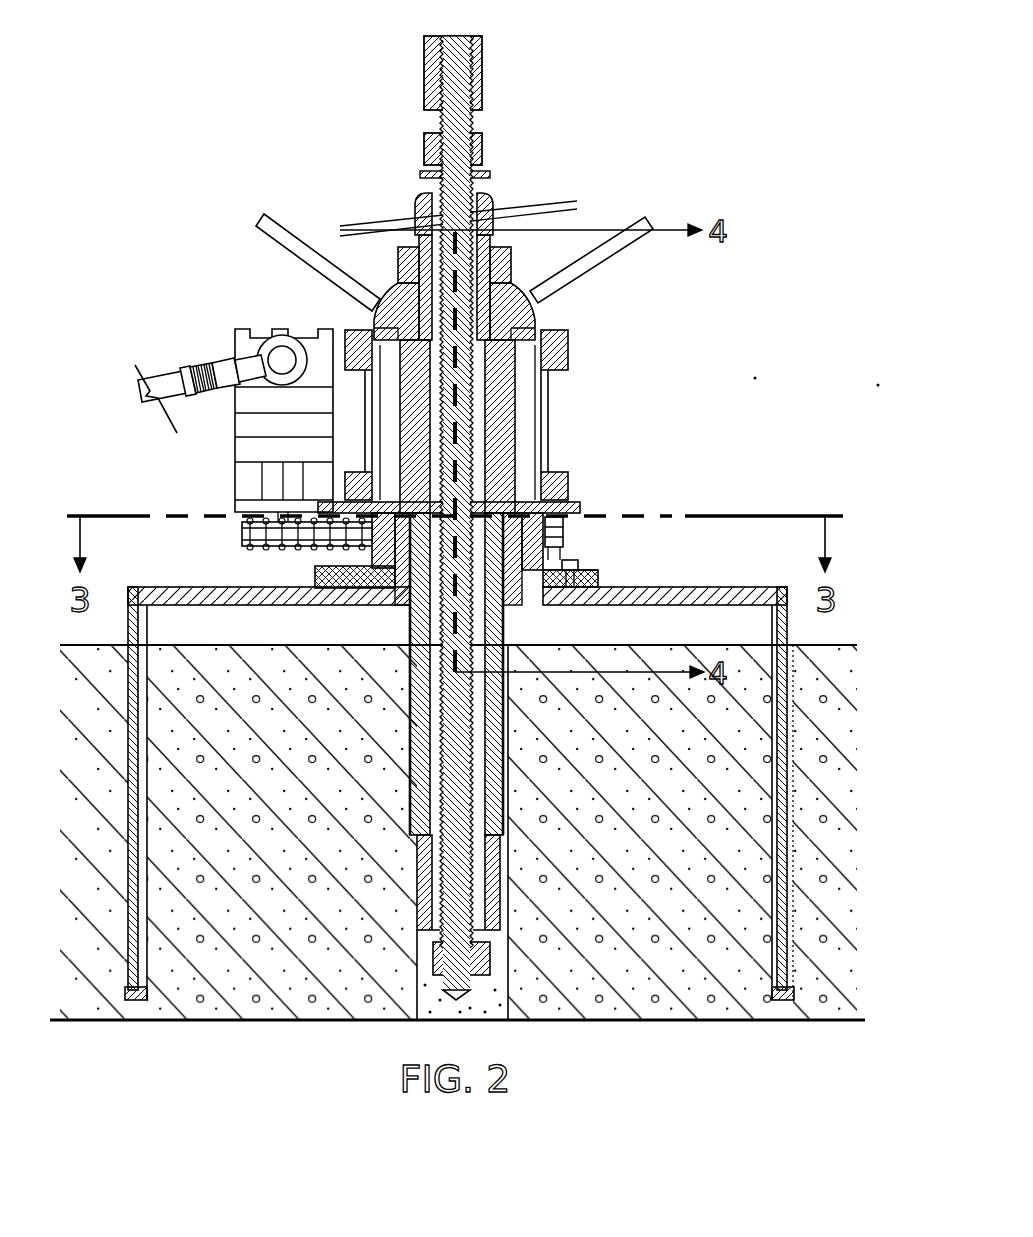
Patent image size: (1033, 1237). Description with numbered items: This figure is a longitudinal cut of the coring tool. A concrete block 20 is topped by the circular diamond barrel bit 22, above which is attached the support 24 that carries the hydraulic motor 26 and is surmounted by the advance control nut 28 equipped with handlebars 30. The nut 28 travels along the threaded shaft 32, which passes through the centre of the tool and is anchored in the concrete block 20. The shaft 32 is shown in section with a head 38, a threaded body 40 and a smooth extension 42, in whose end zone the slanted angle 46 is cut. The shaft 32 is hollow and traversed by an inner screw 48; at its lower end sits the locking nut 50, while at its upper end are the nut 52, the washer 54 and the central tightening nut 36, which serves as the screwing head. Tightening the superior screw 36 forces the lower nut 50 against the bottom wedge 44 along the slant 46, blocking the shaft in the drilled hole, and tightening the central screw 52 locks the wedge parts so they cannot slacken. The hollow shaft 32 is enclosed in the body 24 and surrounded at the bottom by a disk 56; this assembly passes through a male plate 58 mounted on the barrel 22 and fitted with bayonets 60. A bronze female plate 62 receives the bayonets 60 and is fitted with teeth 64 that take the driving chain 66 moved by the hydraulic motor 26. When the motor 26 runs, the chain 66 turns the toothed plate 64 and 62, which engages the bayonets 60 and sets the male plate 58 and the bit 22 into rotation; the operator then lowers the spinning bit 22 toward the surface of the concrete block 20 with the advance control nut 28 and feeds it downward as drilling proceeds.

The concrete block 20 is at (242, 643).
The circular diamond barrel bit 22 is at (745, 595).
The support 24 is at (548, 392).
The hydraulic motor 26 is at (280, 329).
The nut 28 is at (540, 305).
The handlebars 30 is at (646, 218).
The threaded shaft 32 is at (500, 232).
The central tightening nut 36 is at (483, 58).
The head 38 is at (490, 195).
The threaded body 40 is at (505, 647).
The smooth extension 42 is at (412, 660).
The bottom wedge 44 is at (500, 870).
The angle 46 is at (480, 737).
The inner screw 48 is at (467, 127).
The locking nut 50 is at (480, 965).
The nut 52 is at (484, 145).
The washer 54 is at (428, 172).
The disk 56 is at (340, 582).
The male plate 58 is at (592, 600).
The bayonets 60 is at (570, 562).
The bronze female plate 62 is at (598, 582).
The teeth 64 is at (560, 530).
The driving chain 66 is at (242, 533).